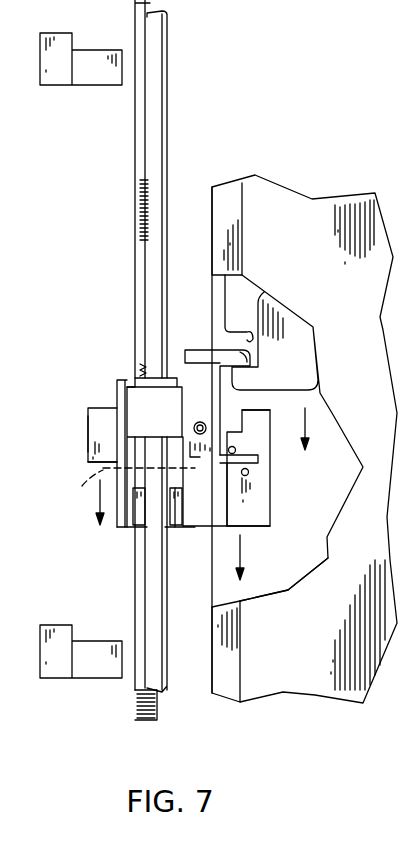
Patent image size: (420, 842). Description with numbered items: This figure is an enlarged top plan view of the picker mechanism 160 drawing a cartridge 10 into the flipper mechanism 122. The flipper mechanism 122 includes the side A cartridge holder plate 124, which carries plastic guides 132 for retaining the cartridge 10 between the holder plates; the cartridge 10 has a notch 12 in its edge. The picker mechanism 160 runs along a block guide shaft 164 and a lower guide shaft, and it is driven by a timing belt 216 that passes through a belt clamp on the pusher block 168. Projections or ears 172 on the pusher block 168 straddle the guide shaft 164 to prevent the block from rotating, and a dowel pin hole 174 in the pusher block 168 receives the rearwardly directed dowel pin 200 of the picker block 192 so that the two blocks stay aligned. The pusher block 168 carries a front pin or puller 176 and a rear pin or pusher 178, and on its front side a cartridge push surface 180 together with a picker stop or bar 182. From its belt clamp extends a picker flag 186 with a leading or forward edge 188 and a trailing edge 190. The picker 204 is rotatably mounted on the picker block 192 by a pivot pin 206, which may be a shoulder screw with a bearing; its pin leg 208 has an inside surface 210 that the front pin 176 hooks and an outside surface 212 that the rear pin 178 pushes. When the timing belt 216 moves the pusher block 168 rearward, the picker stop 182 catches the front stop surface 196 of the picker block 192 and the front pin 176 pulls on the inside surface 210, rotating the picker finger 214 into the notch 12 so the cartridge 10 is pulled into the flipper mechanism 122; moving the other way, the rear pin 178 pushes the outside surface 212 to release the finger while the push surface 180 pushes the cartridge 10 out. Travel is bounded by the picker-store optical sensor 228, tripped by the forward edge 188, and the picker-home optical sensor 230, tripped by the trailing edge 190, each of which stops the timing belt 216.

The cartridge 10 is at (250, 294).
The notch 12 is at (262, 320).
The flipper mechanism 122 is at (347, 190).
The side A cartridge holder plate 124 is at (370, 283).
The plastic guides 132 is at (226, 190).
The picker mechanism 160 is at (253, 530).
The block guide shaft 164 is at (165, 658).
The pusher block 168 is at (264, 519).
The projections or ears 172 is at (170, 523).
The dowel pin hole 174 is at (88, 480).
The front pin or puller 176 is at (290, 392).
The rear pin or pusher 178 is at (250, 474).
The cartridge push surface 180 is at (248, 430).
The picker stop or bar 182 is at (121, 383).
The picker flag 186 is at (90, 428).
The leading or forward edge 188 is at (95, 408).
The trailing edge 190 is at (100, 464).
The picker block 192 is at (128, 386).
The front stop surface 196 is at (135, 377).
The dowel pin 200 is at (155, 441).
The picker 204 is at (203, 366).
The pivot pin 206 is at (198, 421).
The pin leg 208 is at (232, 464).
The inside surface 210 is at (240, 451).
The outside surface 212 is at (180, 530).
The picker finger 214 is at (232, 357).
The timing belt 216 is at (141, 153).
The picker-store photointerruptor or optical sensor 228 is at (101, 78).
The picker-home photointerruptor or optical sensor 230 is at (100, 662).